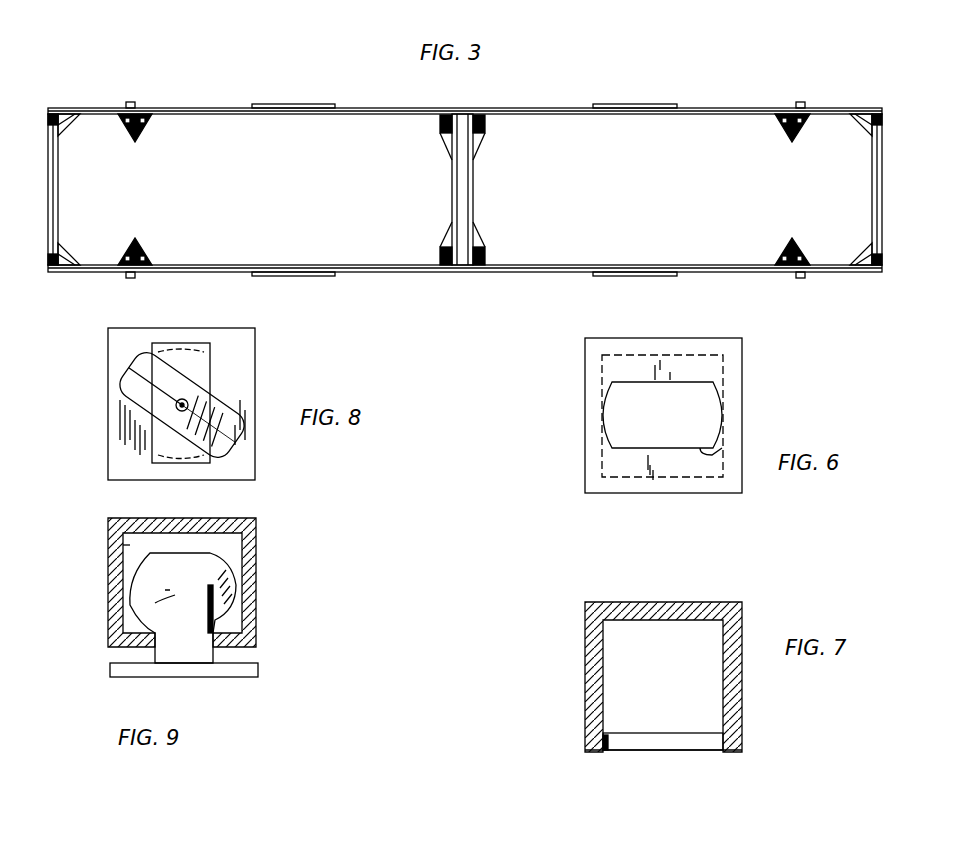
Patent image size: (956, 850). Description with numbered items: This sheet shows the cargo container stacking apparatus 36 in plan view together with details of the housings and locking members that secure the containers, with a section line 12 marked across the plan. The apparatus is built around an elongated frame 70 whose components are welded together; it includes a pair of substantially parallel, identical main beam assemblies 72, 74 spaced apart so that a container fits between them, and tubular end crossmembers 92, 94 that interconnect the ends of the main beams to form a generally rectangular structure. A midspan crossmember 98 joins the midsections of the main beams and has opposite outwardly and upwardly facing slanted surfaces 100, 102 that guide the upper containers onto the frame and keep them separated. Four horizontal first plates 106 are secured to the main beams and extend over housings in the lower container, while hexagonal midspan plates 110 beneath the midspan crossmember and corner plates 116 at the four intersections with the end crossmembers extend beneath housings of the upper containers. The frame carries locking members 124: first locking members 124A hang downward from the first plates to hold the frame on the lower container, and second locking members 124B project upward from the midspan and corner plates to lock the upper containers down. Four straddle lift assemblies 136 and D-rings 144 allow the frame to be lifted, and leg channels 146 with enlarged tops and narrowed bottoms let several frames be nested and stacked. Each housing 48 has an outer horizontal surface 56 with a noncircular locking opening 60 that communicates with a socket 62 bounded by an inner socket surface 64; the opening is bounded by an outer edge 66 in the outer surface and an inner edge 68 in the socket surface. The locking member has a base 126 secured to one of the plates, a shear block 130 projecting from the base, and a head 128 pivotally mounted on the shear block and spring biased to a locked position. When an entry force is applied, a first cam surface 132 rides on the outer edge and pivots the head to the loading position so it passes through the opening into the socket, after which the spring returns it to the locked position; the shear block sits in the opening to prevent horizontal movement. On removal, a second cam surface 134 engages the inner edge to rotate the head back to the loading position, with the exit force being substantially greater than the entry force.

In FIG. 3, the section line 12- 12 is at (256, 92).
In FIG. 3, the container stacking apparatus 36 is at (592, 100).
In FIG. 9, the housing 48 is at (256, 558).
In FIG. 6, the housing 48 is at (730, 350).
In FIG. 7, the housing 48 is at (742, 606).
In FIG. 9, the outer horizontal surface 56 is at (250, 650).
In FIG. 6, the outer horizontal surface 56 is at (605, 455).
In FIG. 7, the outer horizontal surface 56 is at (742, 752).
In FIG. 9, the locking opening 60 is at (192, 665).
In FIG. 6, the locking opening 60 is at (685, 435).
In FIG. 7, the locking opening 60 is at (603, 735).
In FIG. 9, the housing socket 62 is at (125, 540).
In FIG. 7, the housing socket 62 is at (615, 632).
In FIG. 9, the inner socket surface 64 is at (130, 552).
In FIG. 7, the inner socket surface 64 is at (605, 655).
In FIG. 9, the outer edge 66 is at (225, 665).
In FIG. 6, the outer edge 66 is at (712, 455).
In FIG. 7, the outer edge 66 is at (605, 750).
In FIG. 9, the inner edge 68 is at (123, 625).
In FIG. 7, the inner edge 68 is at (680, 733).
In FIG. 3, the frame 70 is at (452, 274).
In FIG. 3, the main beam assembly 72 is at (560, 108).
In FIG. 3, the main beam assembly 74 is at (532, 274).
In FIG. 3, the end crossmember 92 is at (871, 184).
In FIG. 3, the end crossmember 94 is at (59, 184).
In FIG. 3, the midspan crossmember 98 is at (474, 180).
In FIG. 3, the slanted surface 100 is at (452, 174).
In FIG. 3, the slanted surface 102 is at (469, 199).
In FIG. 3, the first plate 106 is at (134, 142).
In FIG. 3, the midspan plate 110 is at (483, 140).
In FIG. 3, the corner plate 116 is at (72, 125).
In FIG. 8, the locking member 124 is at (265, 365).
In FIG. 9, the locking member 124 is at (212, 672).
In FIG. 3, the first locking member 124A is at (145, 126).
In FIG. 3, the second locking member 124B is at (48, 110).
In FIG. 8, the base 126 is at (108, 412).
In FIG. 9, the base 126 is at (110, 668).
In FIG. 8, the head 128 is at (225, 395).
In FIG. 9, the head 128 is at (190, 550).
In FIG. 8, the shear block 130 is at (200, 345).
In FIG. 9, the shear block 130 is at (150, 650).
In FIG. 8, the first cam surface 132 is at (130, 377).
In FIG. 9, the first cam surface 132 is at (245, 533).
In FIG. 9, the second cam surface 134 is at (240, 614).
In FIG. 3, the straddle lift assembly 136 is at (274, 98).
In FIG. 3, the D-ring 144 is at (290, 104).
In FIG. 3, the leg channel 146 is at (132, 102).